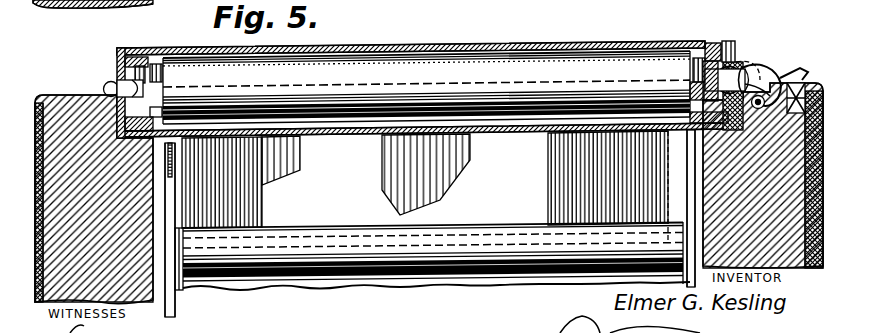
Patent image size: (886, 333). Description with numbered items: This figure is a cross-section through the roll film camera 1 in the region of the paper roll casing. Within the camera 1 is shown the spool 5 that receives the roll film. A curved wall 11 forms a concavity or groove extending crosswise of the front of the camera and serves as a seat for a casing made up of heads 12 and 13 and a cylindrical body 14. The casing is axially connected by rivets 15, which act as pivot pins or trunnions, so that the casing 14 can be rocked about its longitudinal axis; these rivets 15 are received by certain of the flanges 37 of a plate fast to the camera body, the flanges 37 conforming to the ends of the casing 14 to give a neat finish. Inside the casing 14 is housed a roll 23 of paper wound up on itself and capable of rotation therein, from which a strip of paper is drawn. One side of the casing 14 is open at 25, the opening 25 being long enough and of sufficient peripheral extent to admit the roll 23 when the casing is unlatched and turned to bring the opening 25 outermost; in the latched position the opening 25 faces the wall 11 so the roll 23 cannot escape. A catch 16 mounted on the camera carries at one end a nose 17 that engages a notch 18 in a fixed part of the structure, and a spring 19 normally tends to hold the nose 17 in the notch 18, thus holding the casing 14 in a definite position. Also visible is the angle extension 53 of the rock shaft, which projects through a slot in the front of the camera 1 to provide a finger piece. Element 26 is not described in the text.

The camera 1 is at (53, 105).
The spool 5 is at (448, 258).
The curved wall 11 is at (362, 135).
The head 12 is at (117, 62).
The head 13 is at (748, 58).
The cylindrical body 14 is at (463, 43).
The rivets 15 is at (106, 88).
The catch 16 is at (762, 74).
The nose 17 is at (731, 40).
The notch 18 is at (713, 48).
The spring 19 is at (816, 64).
The roll 23 is at (426, 87).
The opening 25 is at (662, 133).
The bearing 26 is at (163, 58).
The flanges 37 is at (118, 50).
The angle extension 53 is at (57, 8).